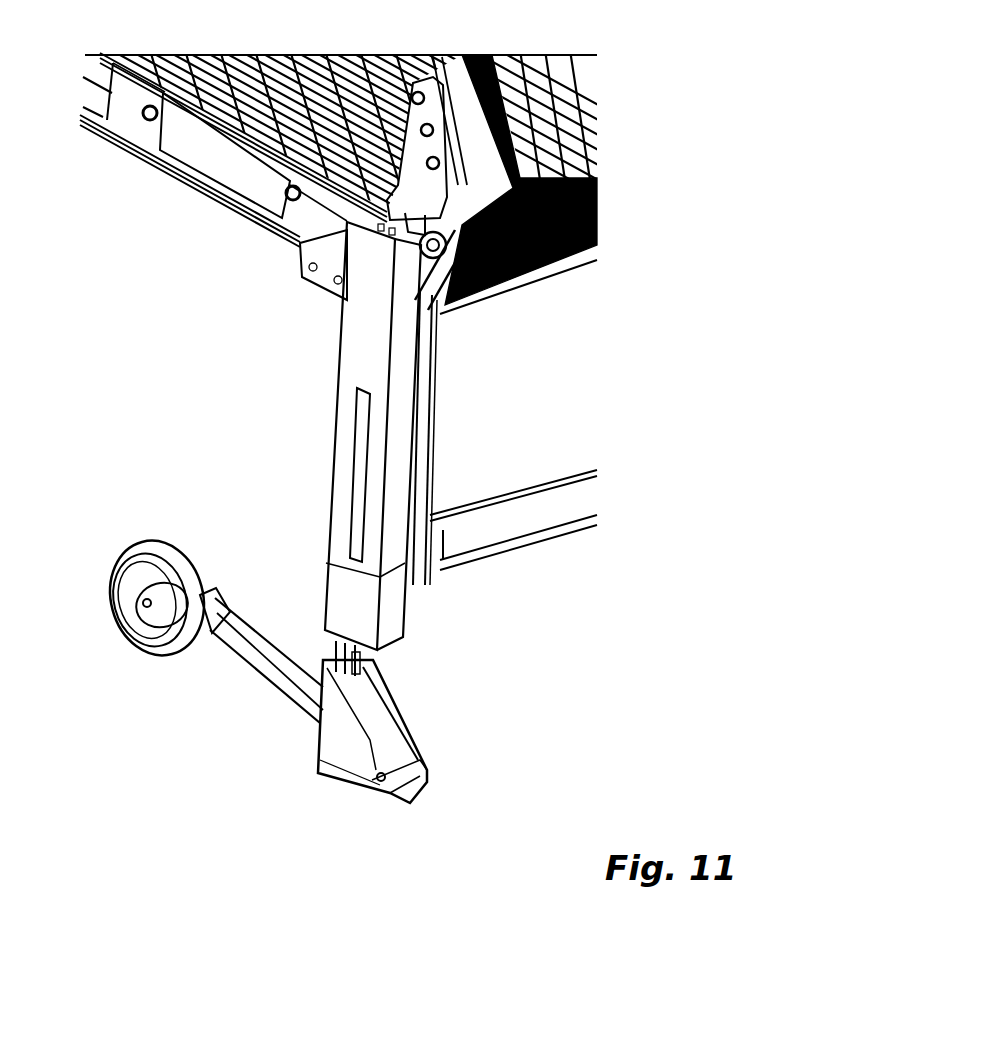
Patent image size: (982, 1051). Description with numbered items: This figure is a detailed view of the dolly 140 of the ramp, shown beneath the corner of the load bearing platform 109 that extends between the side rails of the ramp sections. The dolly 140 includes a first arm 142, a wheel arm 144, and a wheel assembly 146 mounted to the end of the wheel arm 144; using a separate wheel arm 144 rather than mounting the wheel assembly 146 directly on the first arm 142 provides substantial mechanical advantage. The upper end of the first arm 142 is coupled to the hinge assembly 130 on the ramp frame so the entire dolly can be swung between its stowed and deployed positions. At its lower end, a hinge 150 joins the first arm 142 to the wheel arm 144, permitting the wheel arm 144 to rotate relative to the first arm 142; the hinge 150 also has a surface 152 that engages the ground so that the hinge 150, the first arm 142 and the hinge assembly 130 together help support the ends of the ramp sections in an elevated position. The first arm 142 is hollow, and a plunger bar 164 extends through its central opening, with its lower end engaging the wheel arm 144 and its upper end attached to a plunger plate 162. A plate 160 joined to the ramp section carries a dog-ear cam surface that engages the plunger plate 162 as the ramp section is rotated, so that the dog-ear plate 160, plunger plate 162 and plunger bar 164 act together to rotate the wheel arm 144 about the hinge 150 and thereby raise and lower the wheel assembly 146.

The platform 109 is at (330, 55).
The hinge assembly 130 is at (473, 283).
The dolly 140 is at (333, 832).
The first arm 142 is at (340, 360).
The wheel arm 144 is at (253, 663).
The wheel assembly 146 is at (128, 633).
The hinge 150 is at (423, 762).
The surface 152 is at (333, 783).
The dog-ear plate 160 is at (387, 200).
The plunger plate 162 is at (445, 203).
The plunger bar 164 is at (367, 690).